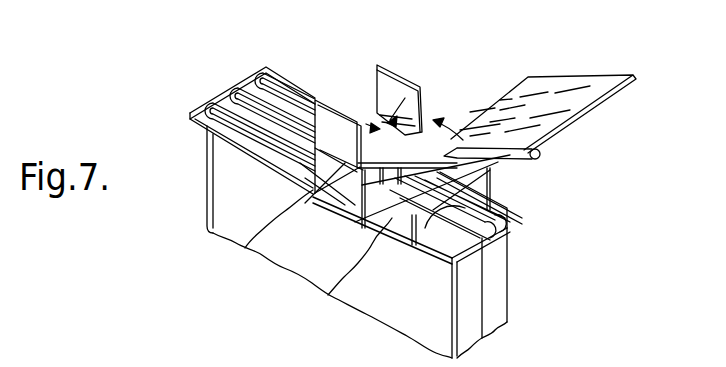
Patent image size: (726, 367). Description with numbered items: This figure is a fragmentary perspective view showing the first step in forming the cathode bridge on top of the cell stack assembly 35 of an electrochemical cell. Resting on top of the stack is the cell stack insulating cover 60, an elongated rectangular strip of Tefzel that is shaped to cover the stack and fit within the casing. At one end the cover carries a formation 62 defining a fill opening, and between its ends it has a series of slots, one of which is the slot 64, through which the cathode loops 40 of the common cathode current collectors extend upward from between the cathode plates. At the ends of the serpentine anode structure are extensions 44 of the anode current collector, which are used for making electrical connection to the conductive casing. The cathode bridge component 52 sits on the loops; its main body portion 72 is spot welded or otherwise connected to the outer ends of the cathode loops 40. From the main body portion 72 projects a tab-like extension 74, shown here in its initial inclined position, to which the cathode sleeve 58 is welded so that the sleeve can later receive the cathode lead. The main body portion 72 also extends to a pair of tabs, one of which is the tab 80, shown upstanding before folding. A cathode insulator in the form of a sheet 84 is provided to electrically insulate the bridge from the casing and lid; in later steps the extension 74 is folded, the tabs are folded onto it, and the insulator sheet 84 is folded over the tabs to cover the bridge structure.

The cell stack assembly 35 is at (206, 208).
The loop 40 is at (246, 248).
The extensions 44 is at (492, 188).
The cathode bridge component 52 is at (343, 88).
The cathode sleeve 58 is at (522, 160).
The cell stack insulating cover 60 is at (228, 88).
The formation 62 is at (433, 250).
The slot 64 is at (292, 201).
The main body portion 72 is at (367, 122).
The tab-like extension 74 is at (456, 137).
The tab 80 is at (395, 83).
The cathode insulator sheet 84 is at (598, 107).